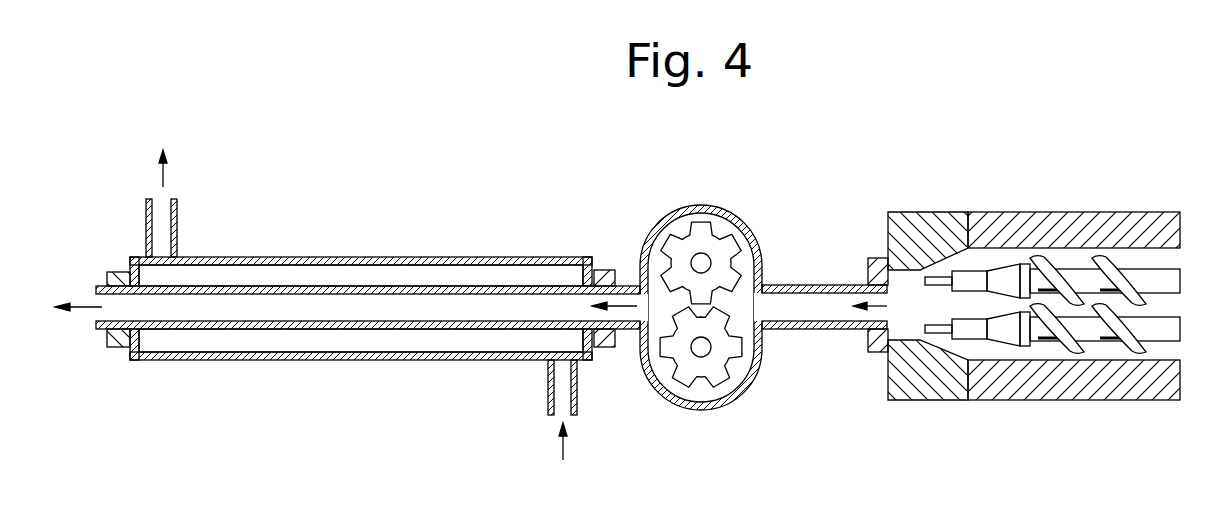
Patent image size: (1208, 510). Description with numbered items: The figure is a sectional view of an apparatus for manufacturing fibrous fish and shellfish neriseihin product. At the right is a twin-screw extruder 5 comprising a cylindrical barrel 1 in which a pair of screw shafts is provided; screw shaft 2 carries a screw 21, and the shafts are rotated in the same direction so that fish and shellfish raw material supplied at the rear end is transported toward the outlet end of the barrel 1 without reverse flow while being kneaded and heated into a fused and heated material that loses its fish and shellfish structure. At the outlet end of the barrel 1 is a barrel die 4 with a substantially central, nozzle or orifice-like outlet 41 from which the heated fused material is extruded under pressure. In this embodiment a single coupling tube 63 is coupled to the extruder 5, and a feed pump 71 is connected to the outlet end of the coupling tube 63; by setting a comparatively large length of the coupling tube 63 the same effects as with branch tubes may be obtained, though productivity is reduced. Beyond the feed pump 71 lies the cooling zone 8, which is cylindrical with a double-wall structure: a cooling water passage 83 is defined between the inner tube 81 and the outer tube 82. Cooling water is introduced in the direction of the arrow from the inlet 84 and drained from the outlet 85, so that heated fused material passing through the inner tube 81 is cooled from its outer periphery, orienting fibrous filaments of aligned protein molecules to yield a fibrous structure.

The cylindrical barrel 1 is at (1035, 228).
The screw shaft 2 is at (1052, 353).
The screw 21 is at (1150, 347).
The barrel die 4 is at (918, 230).
The twin-screw extruder 5 is at (1034, 291).
The outlet 41 is at (884, 348).
The coupling tube 63 is at (799, 310).
The feed pump 71 is at (744, 231).
The cooling zone 8 is at (361, 305).
The inner tube 81 is at (353, 290).
The outer tube 82 is at (290, 257).
The cooling water passage 83 is at (487, 275).
The inlet 84 is at (560, 392).
The outlet 85 is at (162, 240).